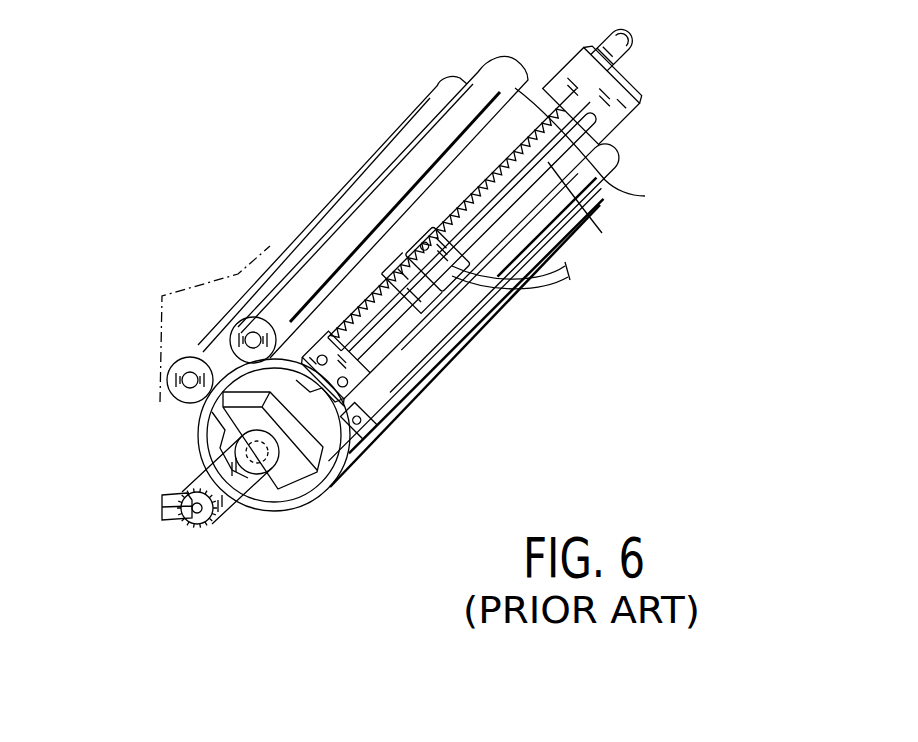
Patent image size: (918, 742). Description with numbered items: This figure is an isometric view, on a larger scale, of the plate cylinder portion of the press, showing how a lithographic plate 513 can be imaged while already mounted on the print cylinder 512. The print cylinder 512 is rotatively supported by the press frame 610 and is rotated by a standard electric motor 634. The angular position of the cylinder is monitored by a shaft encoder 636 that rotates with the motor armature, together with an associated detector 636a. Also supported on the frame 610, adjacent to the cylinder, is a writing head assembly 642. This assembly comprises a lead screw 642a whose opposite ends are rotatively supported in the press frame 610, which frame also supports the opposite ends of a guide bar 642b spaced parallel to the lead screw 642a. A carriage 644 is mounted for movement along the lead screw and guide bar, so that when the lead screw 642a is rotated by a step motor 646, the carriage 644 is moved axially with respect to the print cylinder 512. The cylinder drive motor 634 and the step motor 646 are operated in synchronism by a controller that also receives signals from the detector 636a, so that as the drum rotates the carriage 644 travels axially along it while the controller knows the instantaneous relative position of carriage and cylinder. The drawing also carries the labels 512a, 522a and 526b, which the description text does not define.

The print cylinder 512 is at (155, 434).
The drum inner ring 512a is at (325, 478).
The lithographic plate 513 is at (292, 507).
The guide tube 522a is at (326, 262).
The sheet path 526b is at (200, 332).
The press frame 610 is at (628, 103).
The electric motor 634 is at (237, 503).
The shaft encoder 636 is at (200, 530).
The detector 636a is at (175, 518).
The writing head assembly 642 is at (533, 108).
The lead screw 642a is at (598, 187).
The guide bar 642b is at (565, 222).
The carriage 644 is at (443, 293).
The step motor 646 is at (620, 57).